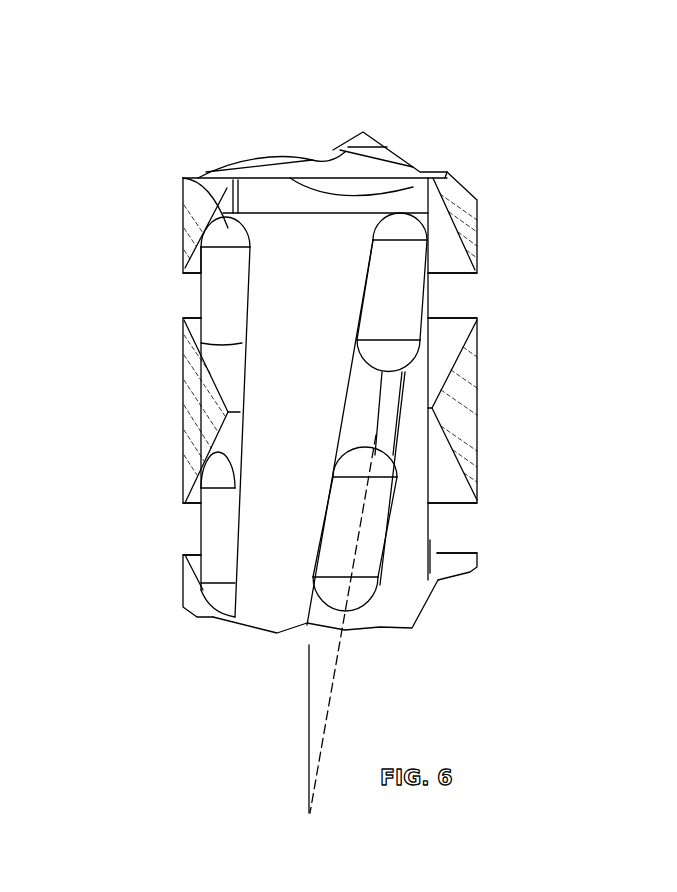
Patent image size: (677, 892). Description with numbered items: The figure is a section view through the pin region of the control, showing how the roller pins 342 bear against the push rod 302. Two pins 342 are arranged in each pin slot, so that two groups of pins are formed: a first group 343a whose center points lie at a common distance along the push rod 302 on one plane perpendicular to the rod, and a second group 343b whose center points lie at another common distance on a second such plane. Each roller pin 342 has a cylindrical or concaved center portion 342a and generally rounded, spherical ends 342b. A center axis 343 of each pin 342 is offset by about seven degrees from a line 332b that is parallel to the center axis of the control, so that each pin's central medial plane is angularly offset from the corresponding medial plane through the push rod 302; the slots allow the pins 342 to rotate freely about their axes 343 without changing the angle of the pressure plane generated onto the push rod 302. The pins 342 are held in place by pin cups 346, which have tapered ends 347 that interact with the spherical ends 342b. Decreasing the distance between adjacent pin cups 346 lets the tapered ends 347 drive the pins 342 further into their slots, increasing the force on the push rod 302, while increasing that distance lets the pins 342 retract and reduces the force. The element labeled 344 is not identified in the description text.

The push rod 302 is at (357, 397).
The roller pins 342 is at (388, 268).
The center portion 342a is at (213, 312).
The rounded end 342b is at (228, 228).
The center axis 343 is at (330, 692).
The first group 343a is at (153, 285).
The second group 343b is at (173, 531).
The ramp surface 344 is at (335, 404).
The pin cups 346 is at (497, 205).
The tapered ends 347 is at (448, 253).
The line 332b is at (308, 708).